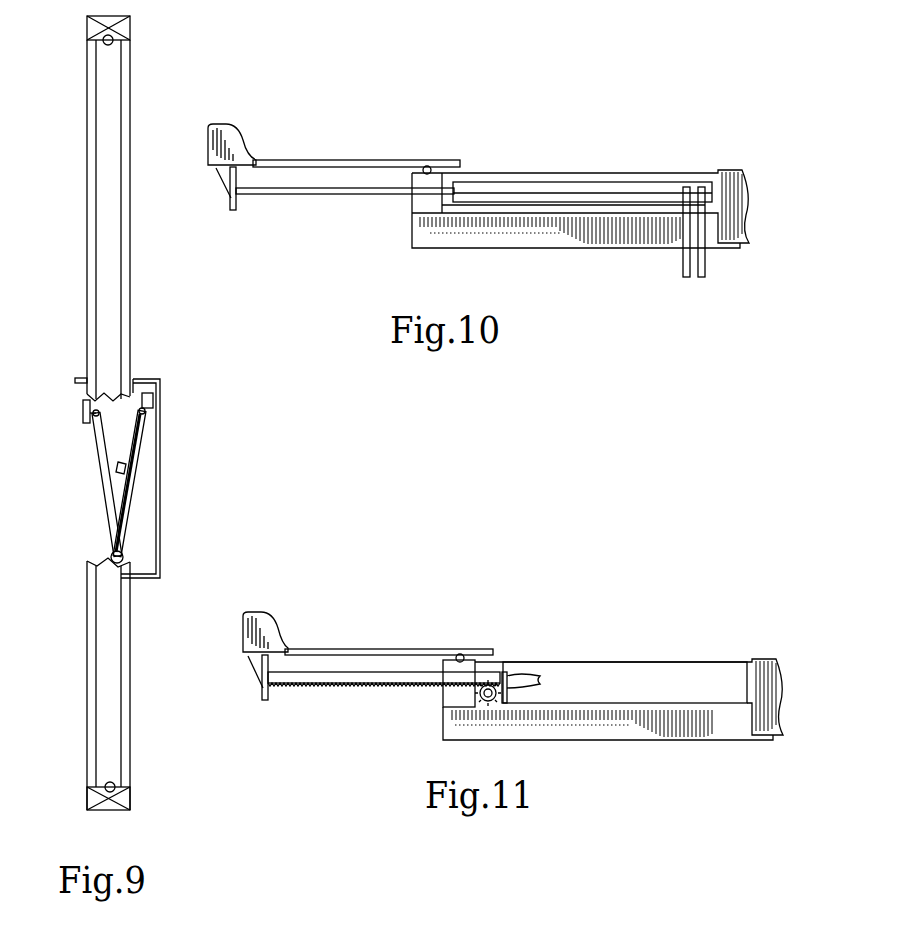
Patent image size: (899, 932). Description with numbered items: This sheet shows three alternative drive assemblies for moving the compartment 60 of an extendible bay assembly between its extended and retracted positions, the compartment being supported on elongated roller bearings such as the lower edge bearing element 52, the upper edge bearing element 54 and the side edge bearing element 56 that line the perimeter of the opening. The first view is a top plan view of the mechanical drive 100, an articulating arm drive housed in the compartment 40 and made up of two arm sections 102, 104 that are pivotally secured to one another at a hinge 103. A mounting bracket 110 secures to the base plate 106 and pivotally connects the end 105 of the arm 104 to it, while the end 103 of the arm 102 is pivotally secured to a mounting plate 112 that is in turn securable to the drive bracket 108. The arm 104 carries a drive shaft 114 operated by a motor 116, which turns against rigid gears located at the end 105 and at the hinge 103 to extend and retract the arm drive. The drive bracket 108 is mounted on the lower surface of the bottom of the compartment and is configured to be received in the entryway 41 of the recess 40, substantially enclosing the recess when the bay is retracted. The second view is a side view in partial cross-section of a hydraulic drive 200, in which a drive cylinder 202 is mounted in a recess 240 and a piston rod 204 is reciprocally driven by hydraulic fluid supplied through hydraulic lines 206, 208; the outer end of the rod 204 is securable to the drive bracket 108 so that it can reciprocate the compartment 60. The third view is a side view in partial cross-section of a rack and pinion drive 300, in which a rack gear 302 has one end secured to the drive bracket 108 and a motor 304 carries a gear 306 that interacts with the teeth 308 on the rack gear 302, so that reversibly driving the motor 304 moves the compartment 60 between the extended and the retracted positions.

In FIG. 9, the compartment 40 is at (197, 478).
In FIG. 9, the entryway 41 is at (86, 541).
In FIG. 9, the lower edge bearing element 52 is at (105, 310).
In FIG. 9, the upper edge bearing element 54 is at (108, 785).
In FIG. 9, the side edge bearing element 56 is at (110, 48).
In FIG. 10, the compartment 60 is at (305, 154).
In FIG. 11, the compartment 60 is at (337, 642).
In FIG. 9, the mechanical drive 100 is at (137, 457).
In FIG. 9, the arm section 102 is at (112, 503).
In FIG. 9, the hinge 103 is at (96, 402).
In FIG. 9, the arm section 104 is at (128, 458).
In FIG. 9, the end of arm 104 105 is at (146, 412).
In FIG. 9, the base plate 106 is at (160, 422).
In FIG. 10, the drive bracket 108 is at (228, 196).
In FIG. 11, the drive bracket 108 is at (260, 680).
In FIG. 9, the mounting bracket 110 is at (146, 395).
In FIG. 9, the mounting plate 112 is at (83, 413).
In FIG. 9, the drive shaft 114 is at (125, 447).
In FIG. 9, the motor 116 is at (125, 473).
In FIG. 10, the hydraulic drive 200 is at (540, 183).
In FIG. 10, the drive cylinder 202 is at (545, 205).
In FIG. 10, the piston rod 204 is at (330, 195).
In FIG. 10, the hydraulic line 206 is at (685, 270).
In FIG. 10, the hydraulic line 208 is at (706, 262).
In FIG. 10, the recess 240 is at (508, 216).
In FIG. 11, the rack and pinion drive 300 is at (524, 695).
In FIG. 11, the rack gear 302 is at (382, 667).
In FIG. 11, the motor 304 is at (500, 705).
In FIG. 11, the gear 306 is at (490, 703).
In FIG. 11, the teeth 308 is at (397, 687).